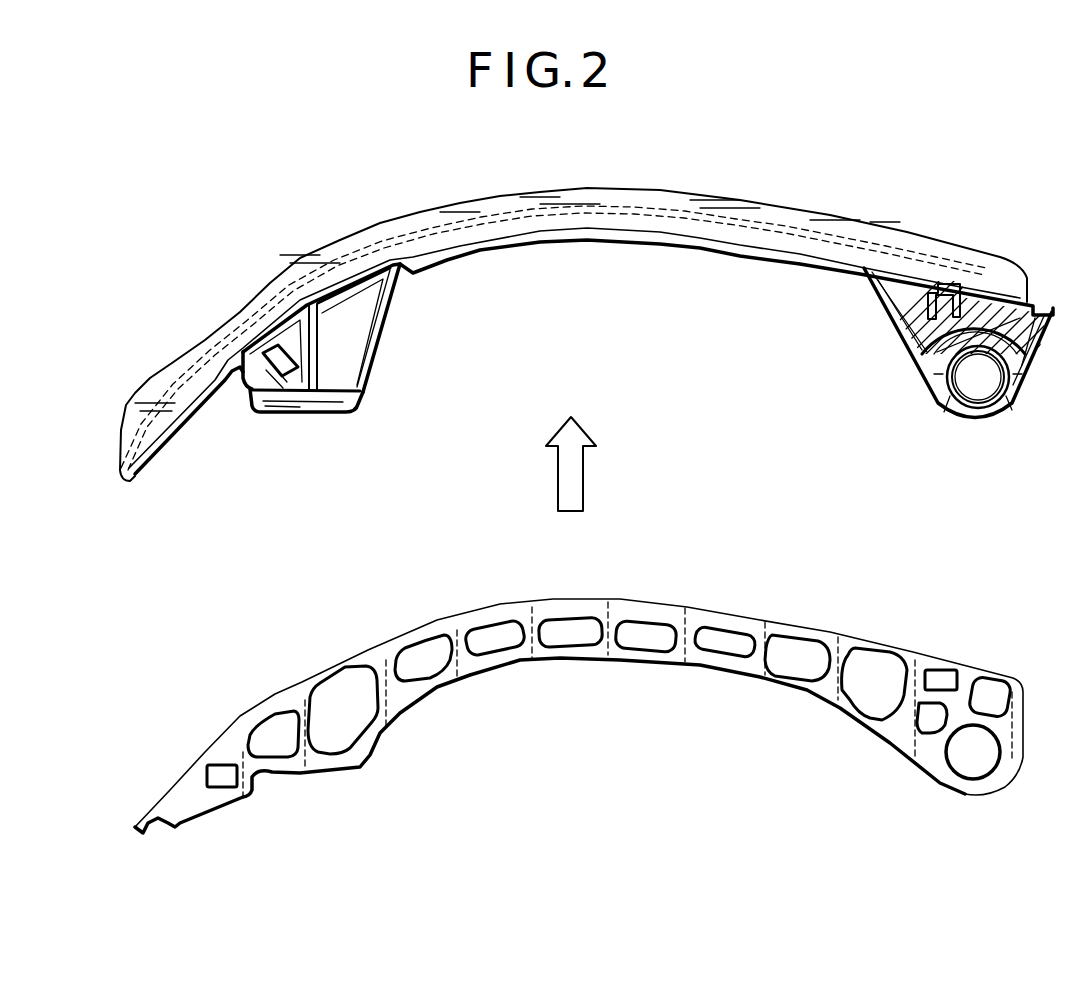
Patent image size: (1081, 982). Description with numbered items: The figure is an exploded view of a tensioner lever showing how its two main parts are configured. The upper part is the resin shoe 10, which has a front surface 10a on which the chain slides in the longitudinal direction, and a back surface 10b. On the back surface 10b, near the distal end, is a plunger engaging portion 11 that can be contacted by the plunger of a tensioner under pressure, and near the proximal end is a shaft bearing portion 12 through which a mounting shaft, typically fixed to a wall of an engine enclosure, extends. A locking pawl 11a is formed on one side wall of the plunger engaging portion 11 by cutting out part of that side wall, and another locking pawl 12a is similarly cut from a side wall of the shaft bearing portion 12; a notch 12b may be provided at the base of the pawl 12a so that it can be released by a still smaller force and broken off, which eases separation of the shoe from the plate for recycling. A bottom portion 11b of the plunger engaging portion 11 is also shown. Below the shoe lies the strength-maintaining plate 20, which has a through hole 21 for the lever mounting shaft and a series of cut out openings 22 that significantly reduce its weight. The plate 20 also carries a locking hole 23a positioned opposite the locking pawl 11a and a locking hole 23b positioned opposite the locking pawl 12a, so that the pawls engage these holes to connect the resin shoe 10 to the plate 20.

The shoe 10 is at (605, 241).
The front surface 10a is at (905, 232).
The back surface 10b is at (870, 268).
The plunger engaging portion 11 is at (289, 340).
The locking pawl 11a is at (265, 352).
The bottom shelf of bracket 11b is at (347, 416).
The shaft bearing portion 12 is at (980, 392).
The locking pawl 12a is at (943, 283).
The notch 12b is at (927, 352).
The strength-maintaining plate 20 is at (497, 600).
The through hole 21 is at (990, 753).
The cut out openings 22 is at (642, 640).
The locking hole 23a is at (947, 671).
The locking hole 23b is at (208, 770).